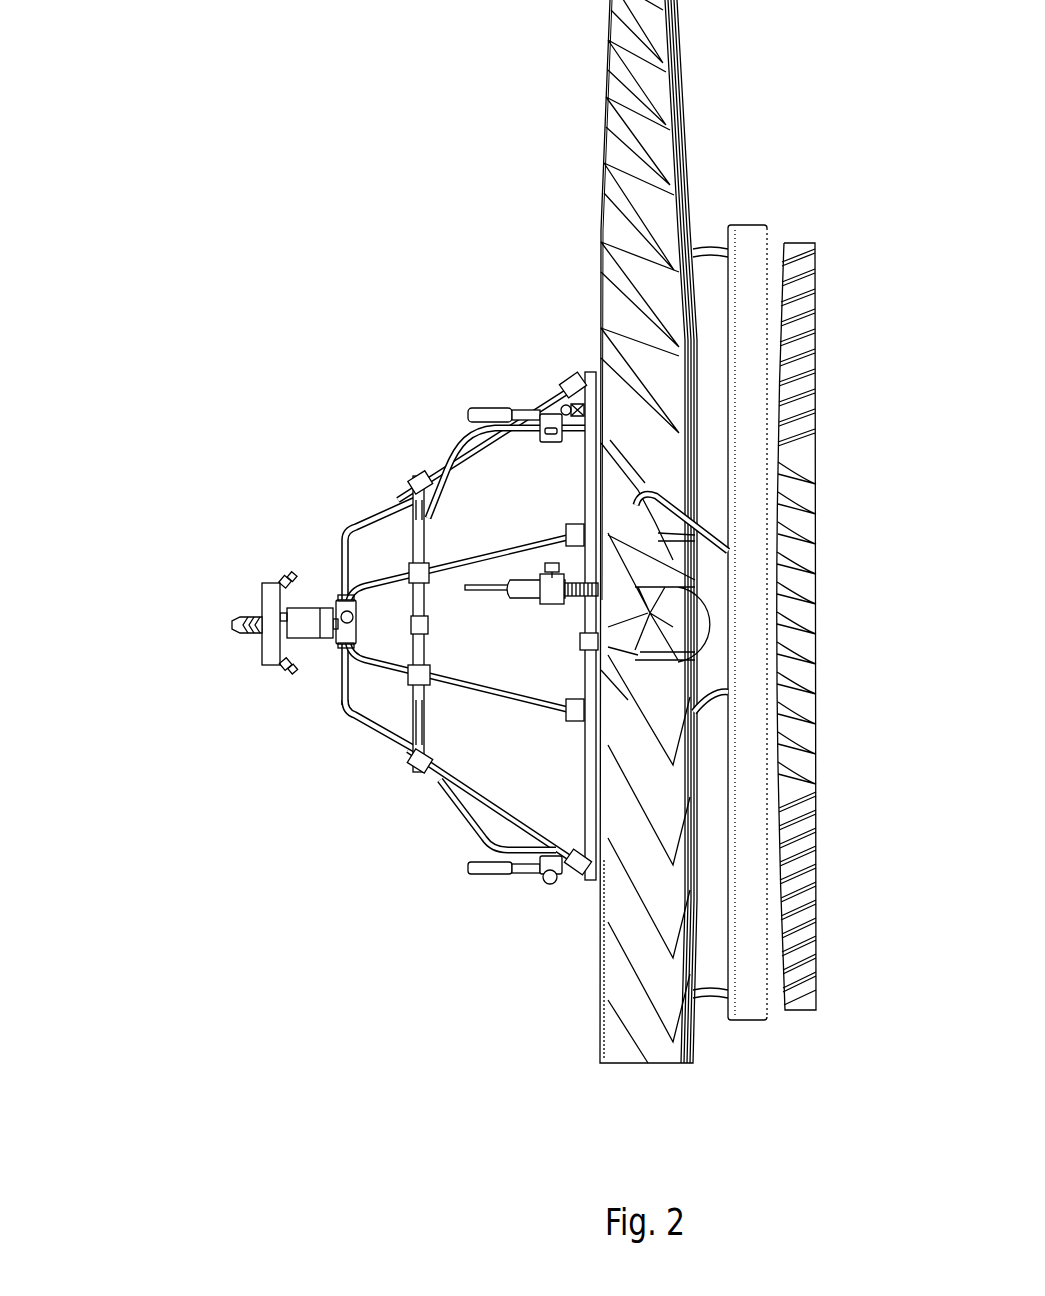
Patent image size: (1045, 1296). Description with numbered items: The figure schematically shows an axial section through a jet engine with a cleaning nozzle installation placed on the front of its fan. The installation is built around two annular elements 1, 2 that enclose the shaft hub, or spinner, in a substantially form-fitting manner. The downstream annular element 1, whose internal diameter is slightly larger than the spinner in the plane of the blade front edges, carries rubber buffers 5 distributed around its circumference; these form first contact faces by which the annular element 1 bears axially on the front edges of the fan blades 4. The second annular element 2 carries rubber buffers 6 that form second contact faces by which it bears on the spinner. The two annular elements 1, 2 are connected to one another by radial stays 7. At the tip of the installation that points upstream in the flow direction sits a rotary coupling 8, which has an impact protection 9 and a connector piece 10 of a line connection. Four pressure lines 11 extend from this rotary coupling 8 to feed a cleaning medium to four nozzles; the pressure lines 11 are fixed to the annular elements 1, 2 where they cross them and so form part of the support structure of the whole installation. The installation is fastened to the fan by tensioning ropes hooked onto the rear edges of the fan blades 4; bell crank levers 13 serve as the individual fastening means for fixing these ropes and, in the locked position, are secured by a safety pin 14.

The annular element 1 is at (589, 760).
The annular element 2 is at (426, 712).
The fan blades 4 is at (598, 300).
The rubber buffers 5 is at (582, 640).
The rubber buffers 6 is at (429, 624).
The radial stays 7 is at (462, 817).
The rotary coupling 8 is at (309, 608).
The impact protection 9 is at (268, 583).
The connector piece 10 is at (230, 623).
The pressure lines 11 is at (367, 731).
The bell crank levers 13 is at (488, 878).
The safety pin 14 is at (548, 886).